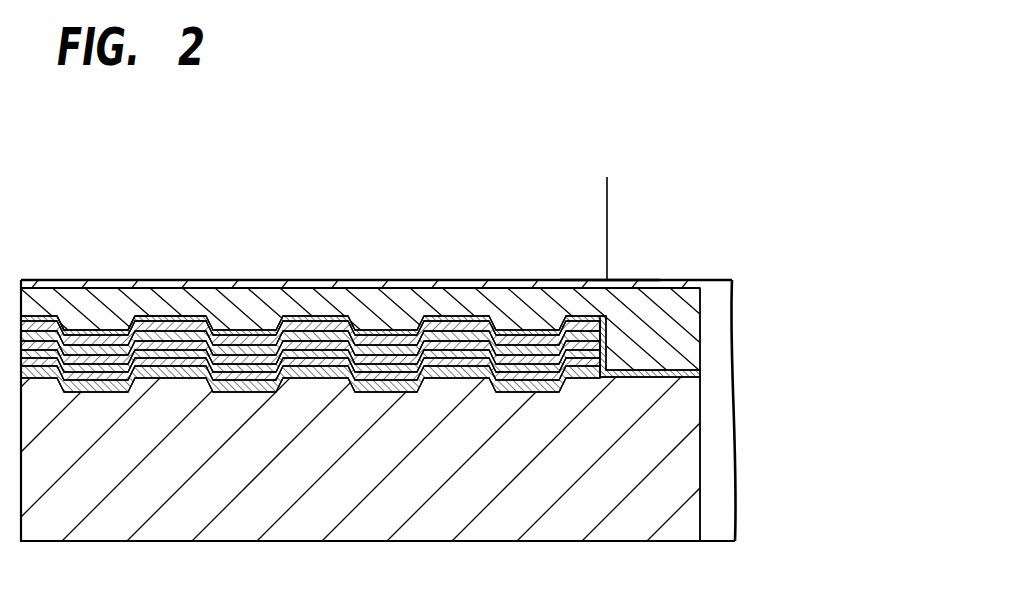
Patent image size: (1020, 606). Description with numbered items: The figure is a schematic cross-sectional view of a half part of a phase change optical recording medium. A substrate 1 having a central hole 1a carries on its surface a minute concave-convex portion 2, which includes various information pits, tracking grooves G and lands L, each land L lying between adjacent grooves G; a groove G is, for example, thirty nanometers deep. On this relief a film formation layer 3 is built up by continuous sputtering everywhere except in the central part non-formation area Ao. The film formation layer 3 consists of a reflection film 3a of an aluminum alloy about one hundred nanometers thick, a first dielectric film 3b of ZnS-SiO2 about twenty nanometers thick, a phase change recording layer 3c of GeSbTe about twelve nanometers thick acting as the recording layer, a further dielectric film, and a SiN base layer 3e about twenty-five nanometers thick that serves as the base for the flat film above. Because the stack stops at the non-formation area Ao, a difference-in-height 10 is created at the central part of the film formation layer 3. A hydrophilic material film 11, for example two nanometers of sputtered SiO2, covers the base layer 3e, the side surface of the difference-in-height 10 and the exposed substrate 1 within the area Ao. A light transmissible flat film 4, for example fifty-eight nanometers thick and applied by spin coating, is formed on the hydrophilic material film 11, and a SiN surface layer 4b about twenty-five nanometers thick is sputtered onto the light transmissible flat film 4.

The substrate 1 is at (687, 522).
The central hole 1a is at (700, 457).
The minute concave-convex portion 2 is at (235, 215).
The groove G is at (97, 378).
The land L is at (168, 378).
The film formation layer 3 is at (441, 372).
The reflection film 3a is at (606, 372).
The first dielectric film 3b is at (606, 327).
The phase change recording layer 3c is at (606, 341).
The base layer 3e is at (606, 318).
The light transmissible flat film 4 is at (640, 304).
The surface layer 4b is at (597, 281).
The difference-in-height 10 is at (604, 314).
The hydrophilic material film 11 is at (625, 300).
The central part non-formation area Ao is at (607, 204).